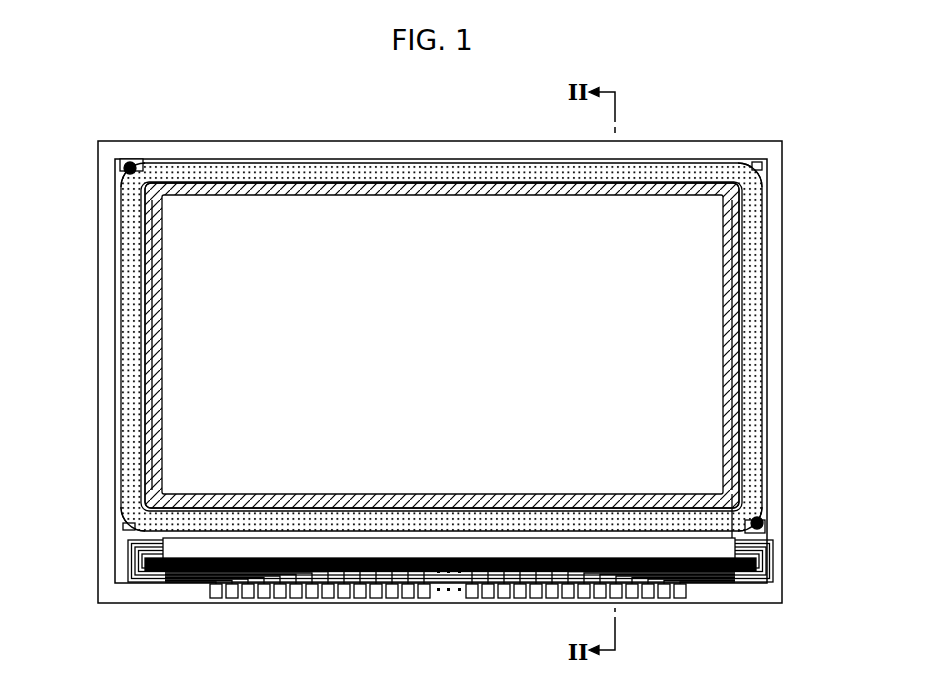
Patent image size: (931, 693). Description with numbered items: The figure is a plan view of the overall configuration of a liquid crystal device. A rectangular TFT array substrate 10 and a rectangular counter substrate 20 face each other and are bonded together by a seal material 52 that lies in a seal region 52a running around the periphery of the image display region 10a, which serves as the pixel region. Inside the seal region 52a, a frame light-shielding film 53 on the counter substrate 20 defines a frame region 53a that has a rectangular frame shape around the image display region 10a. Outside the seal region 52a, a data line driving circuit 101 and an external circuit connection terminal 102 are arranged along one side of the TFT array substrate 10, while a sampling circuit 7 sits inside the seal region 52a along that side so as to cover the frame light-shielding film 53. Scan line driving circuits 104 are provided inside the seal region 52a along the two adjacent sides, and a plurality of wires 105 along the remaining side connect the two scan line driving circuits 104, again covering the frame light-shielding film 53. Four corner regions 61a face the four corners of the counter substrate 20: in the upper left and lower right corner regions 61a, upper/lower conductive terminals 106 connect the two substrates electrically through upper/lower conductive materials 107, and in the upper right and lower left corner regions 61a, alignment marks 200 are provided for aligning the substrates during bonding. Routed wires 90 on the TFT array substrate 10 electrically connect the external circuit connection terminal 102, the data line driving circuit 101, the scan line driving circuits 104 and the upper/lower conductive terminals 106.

The TFT array substrate 10 is at (380, 141).
The image display region 10a is at (223, 302).
The counter substrate 20 is at (430, 159).
The seal material 52 is at (482, 168).
The seal region 52a is at (538, 170).
The frame light-shielding film 53 is at (742, 231).
The frame region 53a is at (740, 268).
The scan line driving circuit 104 is at (735, 333).
The wire 105 is at (331, 190).
The upper/lower conductive terminal 106 is at (132, 164).
The upper/lower conductive material 107 is at (120, 167).
The alignment mark 200 is at (762, 166).
The corner region 61a is at (143, 167).
The routed wire 90 is at (128, 565).
The data line driving circuit 101 is at (193, 550).
The external circuit connection terminal 102 is at (362, 591).
The sampling circuit 7 is at (463, 497).